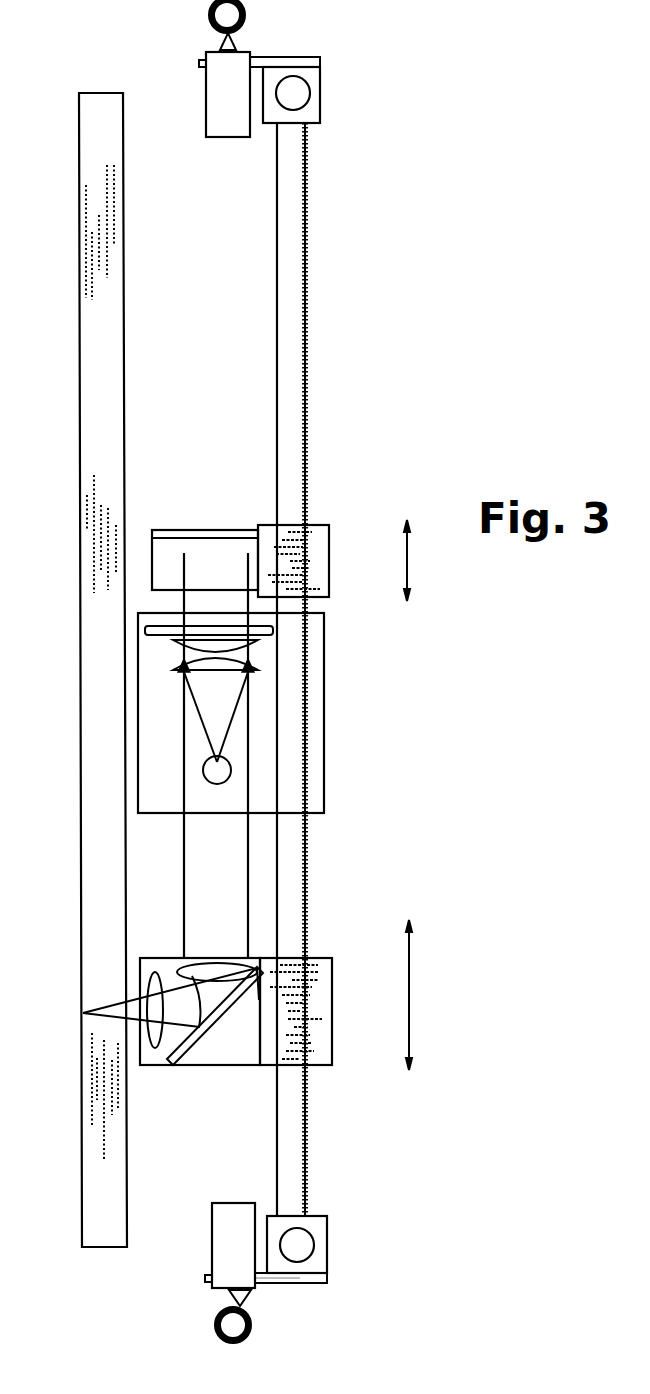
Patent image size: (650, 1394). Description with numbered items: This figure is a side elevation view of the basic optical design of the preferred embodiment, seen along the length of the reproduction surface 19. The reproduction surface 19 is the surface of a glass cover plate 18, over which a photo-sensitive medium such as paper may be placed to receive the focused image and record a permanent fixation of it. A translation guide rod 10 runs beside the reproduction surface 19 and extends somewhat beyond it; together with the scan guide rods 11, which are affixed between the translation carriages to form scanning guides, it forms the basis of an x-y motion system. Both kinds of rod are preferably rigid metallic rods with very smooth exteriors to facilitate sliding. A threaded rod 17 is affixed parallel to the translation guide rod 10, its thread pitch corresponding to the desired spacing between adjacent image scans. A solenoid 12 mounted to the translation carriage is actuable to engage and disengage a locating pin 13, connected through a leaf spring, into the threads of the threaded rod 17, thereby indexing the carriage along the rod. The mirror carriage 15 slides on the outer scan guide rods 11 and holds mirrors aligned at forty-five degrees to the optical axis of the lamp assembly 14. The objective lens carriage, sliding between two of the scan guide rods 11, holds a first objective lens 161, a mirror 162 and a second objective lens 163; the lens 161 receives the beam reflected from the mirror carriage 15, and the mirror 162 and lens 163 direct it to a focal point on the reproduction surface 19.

The translation guide rod 10 is at (310, 92).
The scan guide rod 11 is at (307, 267).
The solenoid 12 is at (206, 96).
The locating pin 13 is at (277, 1293).
The lamp assembly 14 is at (324, 742).
The mirror carriage 15 is at (330, 525).
The threaded rod 17 is at (246, 20).
The glass cover plate 18 is at (124, 525).
The reproduction surface 19 is at (80, 665).
The first objective lens 161 is at (216, 965).
The mirror 162 is at (185, 1064).
The second objective lens 163 is at (152, 970).